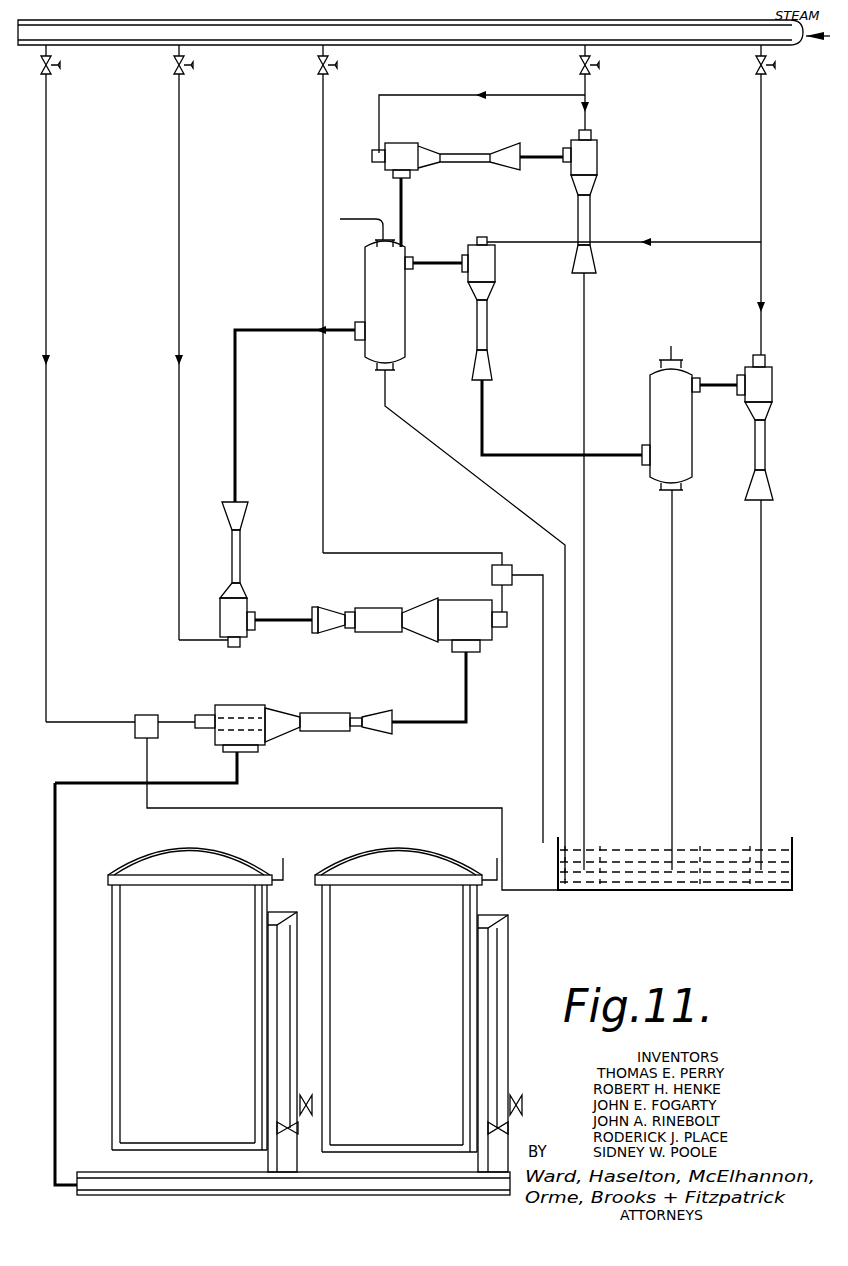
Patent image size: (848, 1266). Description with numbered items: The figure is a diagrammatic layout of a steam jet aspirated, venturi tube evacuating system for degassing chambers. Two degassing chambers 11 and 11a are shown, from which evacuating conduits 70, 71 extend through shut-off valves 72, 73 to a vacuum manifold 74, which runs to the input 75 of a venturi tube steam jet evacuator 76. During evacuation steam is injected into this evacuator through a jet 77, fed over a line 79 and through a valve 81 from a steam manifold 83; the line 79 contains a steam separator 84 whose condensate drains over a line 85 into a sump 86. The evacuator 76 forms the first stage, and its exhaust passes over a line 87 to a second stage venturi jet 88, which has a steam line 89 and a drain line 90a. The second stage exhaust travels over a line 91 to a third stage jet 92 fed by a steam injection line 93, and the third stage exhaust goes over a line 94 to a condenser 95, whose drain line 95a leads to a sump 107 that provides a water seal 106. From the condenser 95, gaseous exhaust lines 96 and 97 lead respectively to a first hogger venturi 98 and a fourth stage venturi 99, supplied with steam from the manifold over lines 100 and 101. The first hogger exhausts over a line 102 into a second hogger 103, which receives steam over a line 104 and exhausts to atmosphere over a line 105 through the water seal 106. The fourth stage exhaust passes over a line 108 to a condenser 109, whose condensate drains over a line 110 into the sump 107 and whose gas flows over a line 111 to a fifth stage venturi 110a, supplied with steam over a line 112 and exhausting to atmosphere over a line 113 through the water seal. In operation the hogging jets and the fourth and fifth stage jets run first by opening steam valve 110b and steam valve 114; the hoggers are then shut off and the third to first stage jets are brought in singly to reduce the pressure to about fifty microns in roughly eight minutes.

The steam manifold 83 is at (163, 2).
The valve 81 is at (55, 72).
The line 79 is at (48, 546).
The line 111 is at (190, 70).
The line 113 is at (333, 70).
The steam line 89 is at (383, 553).
The steam valve 110b is at (597, 68).
The line 104 is at (590, 100).
The line 100 is at (497, 93).
The steam valve 114 is at (752, 68).
The line 112 is at (763, 281).
The line 101 is at (705, 235).
The first hogger venturi 98 is at (465, 163).
The line 102 is at (545, 160).
The gaseous exhaust line 96 is at (404, 222).
The second hogger 103 is at (592, 228).
The line 105 is at (585, 320).
The condenser 95 is at (395, 320).
The gaseous exhaust line 97 is at (437, 262).
The fourth stage venturi 99 is at (476, 340).
The line 108 is at (545, 455).
The condenser 109 is at (680, 447).
The line 110 is at (674, 620).
The fifth stage venturi 110a is at (766, 472).
The line 94 is at (237, 413).
The steam injection line 93 is at (181, 470).
The third stage jet 92 is at (242, 553).
The line 91 is at (275, 624).
The second stage venturi jet 88 is at (409, 618).
The drain line 90a is at (543, 668).
The line 87 is at (468, 712).
The venturi tube steam jet evacuator 76 is at (281, 727).
The jet 77 is at (205, 730).
The steam separator 84 is at (128, 742).
The line 85 is at (207, 810).
The input 75 is at (245, 762).
The vacuum manifold 74 is at (57, 845).
The drain line 95a is at (431, 445).
The sump 107 is at (625, 898).
The water seal 106 is at (590, 848).
The sump 86 is at (532, 892).
The degassing chamber 11 is at (113, 1040).
The evacuating conduit 70 is at (275, 1022).
The shut-off valve 72 is at (277, 1128).
The degassing chamber 11a is at (322, 900).
The evacuating conduit 71 is at (490, 1022).
The shut-off valve 73 is at (488, 1128).